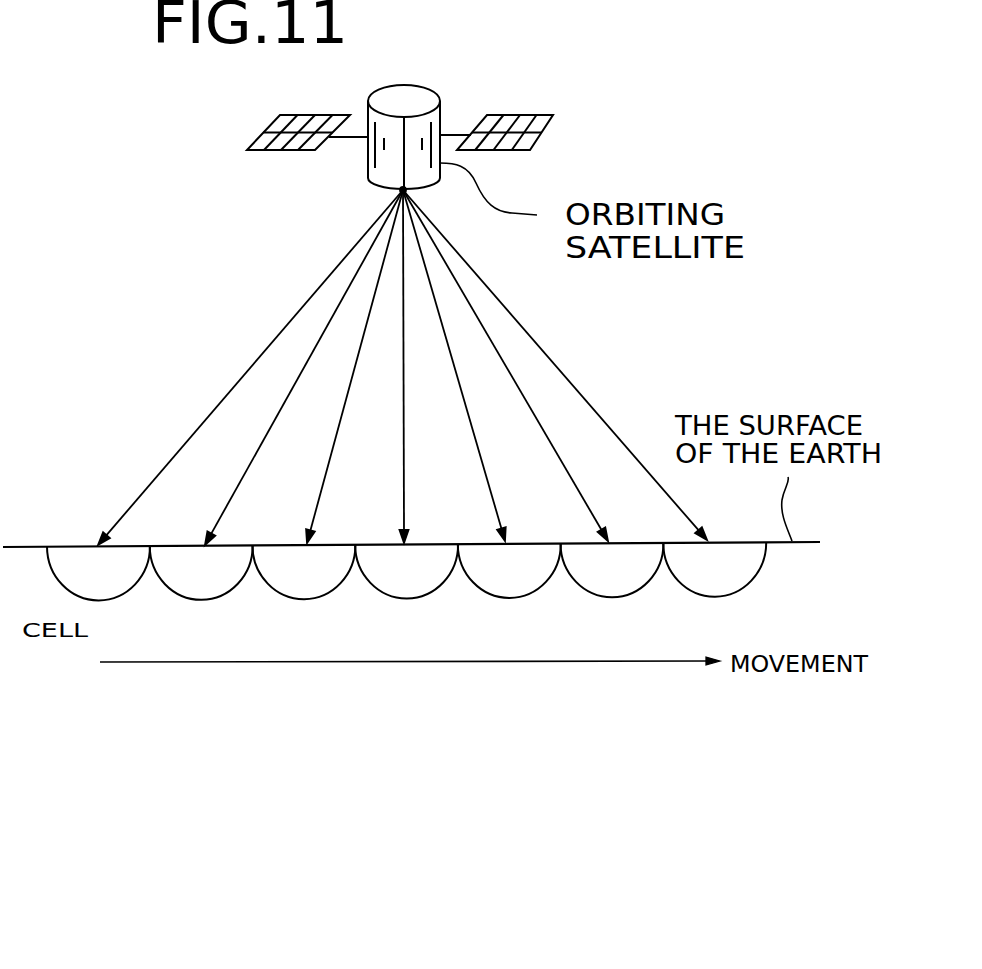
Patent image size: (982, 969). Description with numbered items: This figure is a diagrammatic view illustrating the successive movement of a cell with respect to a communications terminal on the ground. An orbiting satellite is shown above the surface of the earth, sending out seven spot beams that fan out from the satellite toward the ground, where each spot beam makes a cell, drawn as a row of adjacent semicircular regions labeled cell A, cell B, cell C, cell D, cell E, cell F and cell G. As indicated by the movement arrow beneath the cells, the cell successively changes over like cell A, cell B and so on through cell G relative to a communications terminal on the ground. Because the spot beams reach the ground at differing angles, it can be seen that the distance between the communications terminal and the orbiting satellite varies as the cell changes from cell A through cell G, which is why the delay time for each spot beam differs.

The cell A is at (120, 600).
The cell B is at (222, 600).
The cell C is at (325, 599).
The cell D is at (428, 598).
The cell E is at (530, 598).
The cell F is at (633, 597).
The cell G is at (736, 597).